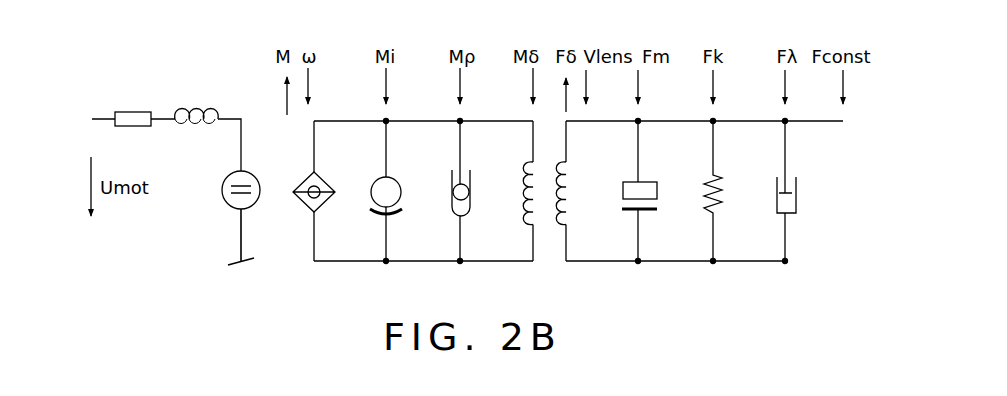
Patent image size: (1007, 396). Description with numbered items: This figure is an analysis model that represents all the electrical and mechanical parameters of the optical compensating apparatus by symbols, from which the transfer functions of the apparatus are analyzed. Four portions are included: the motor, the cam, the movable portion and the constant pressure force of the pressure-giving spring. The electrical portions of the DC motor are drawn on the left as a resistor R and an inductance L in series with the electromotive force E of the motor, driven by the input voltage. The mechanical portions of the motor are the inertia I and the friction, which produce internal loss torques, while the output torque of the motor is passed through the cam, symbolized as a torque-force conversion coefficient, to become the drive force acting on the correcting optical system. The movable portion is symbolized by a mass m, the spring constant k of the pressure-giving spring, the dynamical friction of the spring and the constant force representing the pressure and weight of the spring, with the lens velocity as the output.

The resistor R is at (133, 106).
The inductance L is at (197, 105).
The electromotive force E is at (231, 190).
The inertia I is at (391, 191).
The mass m is at (649, 191).
The spring constant k is at (721, 191).